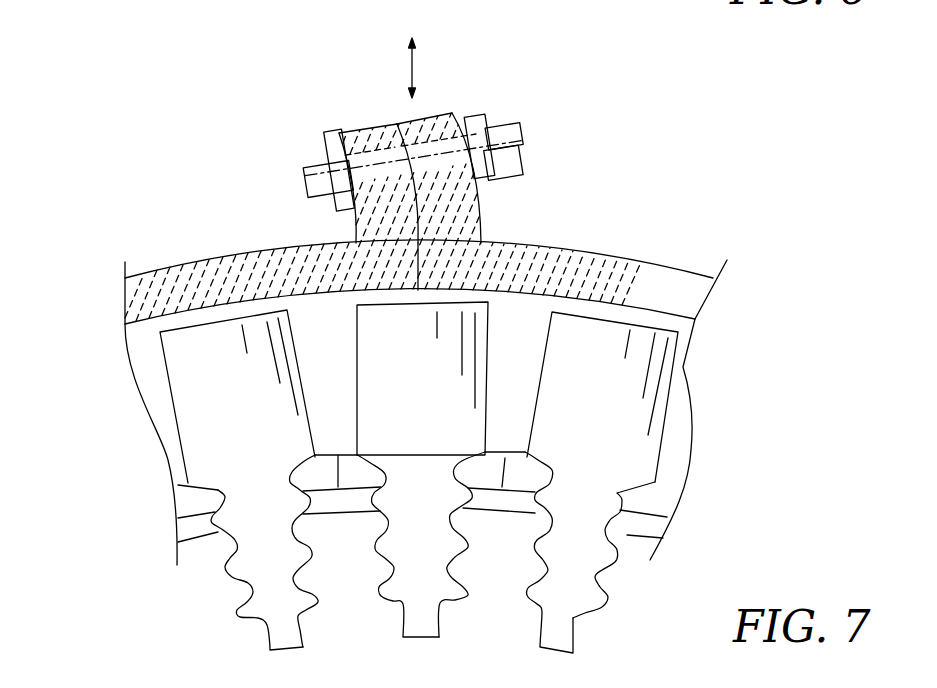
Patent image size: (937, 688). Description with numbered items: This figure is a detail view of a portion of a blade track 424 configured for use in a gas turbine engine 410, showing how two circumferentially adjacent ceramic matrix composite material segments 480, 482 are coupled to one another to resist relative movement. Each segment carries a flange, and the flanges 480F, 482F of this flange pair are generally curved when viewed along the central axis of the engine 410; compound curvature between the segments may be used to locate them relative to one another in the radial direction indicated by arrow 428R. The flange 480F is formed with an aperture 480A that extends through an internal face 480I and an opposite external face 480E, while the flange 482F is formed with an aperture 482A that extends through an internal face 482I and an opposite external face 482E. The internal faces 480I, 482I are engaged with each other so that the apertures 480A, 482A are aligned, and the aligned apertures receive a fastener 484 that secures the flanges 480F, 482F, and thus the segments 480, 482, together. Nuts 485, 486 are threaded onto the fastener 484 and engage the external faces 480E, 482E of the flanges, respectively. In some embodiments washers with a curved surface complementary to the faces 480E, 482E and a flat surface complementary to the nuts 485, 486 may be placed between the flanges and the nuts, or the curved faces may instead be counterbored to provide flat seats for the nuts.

The gas turbine engine 410 is at (583, 52).
The blade track 424 is at (519, 78).
The arrow indicating radial direction 428R is at (418, 67).
The ceramic matrix composite material segment 480 is at (664, 282).
The aperture 480A is at (452, 153).
The external face 480E is at (490, 170).
The flange 480F is at (442, 101).
The internal face 480I is at (422, 244).
The ceramic matrix composite material segment 482 is at (153, 296).
The aperture 482A is at (373, 170).
The external face 482E is at (338, 181).
The flange 482F is at (367, 113).
The internal face 482I is at (400, 210).
The fastener 484 is at (538, 149).
The nut 485 is at (507, 103).
The nut 486 is at (322, 137).